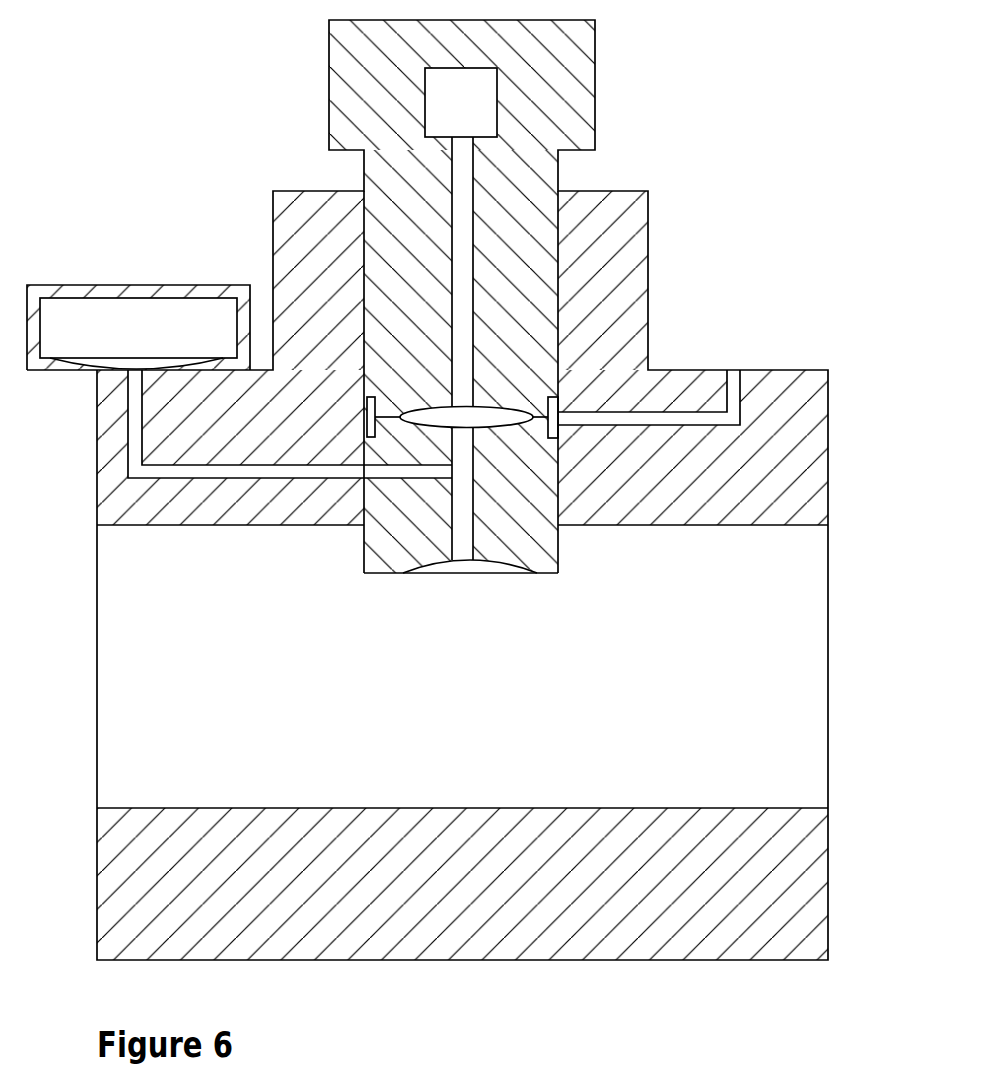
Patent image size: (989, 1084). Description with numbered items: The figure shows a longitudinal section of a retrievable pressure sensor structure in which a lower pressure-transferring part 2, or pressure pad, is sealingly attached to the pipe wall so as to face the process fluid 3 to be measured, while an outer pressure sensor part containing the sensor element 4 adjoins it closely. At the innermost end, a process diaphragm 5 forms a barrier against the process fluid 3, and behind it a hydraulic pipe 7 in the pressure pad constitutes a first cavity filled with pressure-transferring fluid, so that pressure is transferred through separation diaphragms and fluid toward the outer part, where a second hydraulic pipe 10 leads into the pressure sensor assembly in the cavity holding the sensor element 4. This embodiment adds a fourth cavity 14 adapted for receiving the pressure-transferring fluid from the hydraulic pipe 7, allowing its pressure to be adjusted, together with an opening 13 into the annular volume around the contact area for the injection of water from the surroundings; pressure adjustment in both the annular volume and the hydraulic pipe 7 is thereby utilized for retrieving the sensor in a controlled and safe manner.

The pressure-transferring part 2 is at (427, 490).
The process fluid 3 is at (717, 668).
The sensor element 4 is at (551, 86).
The process diaphragm 5 is at (465, 603).
The hydraulic pipe 7 is at (384, 522).
The second hydraulic pipe 10 is at (558, 279).
The opening 13 is at (649, 372).
The fourth cavity 14 is at (290, 482).